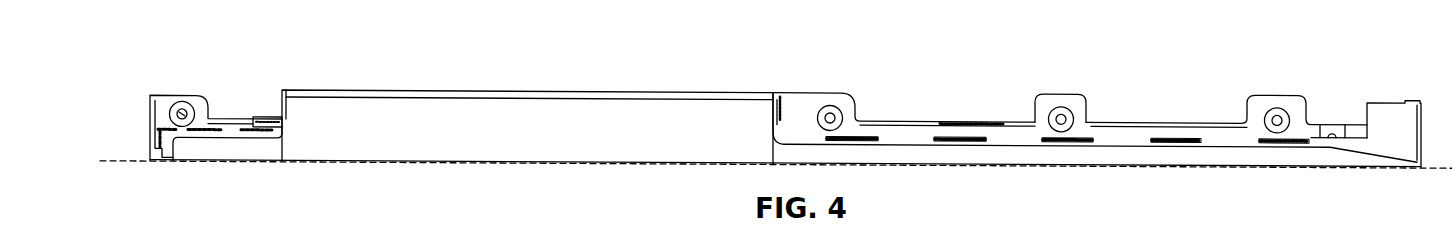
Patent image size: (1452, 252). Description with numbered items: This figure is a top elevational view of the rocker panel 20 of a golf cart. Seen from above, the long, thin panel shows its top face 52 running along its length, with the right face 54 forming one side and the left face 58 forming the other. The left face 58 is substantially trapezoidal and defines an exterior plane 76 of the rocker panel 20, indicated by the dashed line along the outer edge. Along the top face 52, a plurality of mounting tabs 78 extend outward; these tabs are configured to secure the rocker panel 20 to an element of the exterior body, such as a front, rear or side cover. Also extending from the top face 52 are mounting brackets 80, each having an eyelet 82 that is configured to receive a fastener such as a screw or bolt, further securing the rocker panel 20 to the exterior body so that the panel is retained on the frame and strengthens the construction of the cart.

The rocker panel 20 is at (295, 145).
The top face 52 is at (498, 110).
The right face 54 is at (1147, 122).
The left face 58 is at (608, 163).
The exterior plane 76 is at (113, 161).
The mounting tabs 78 is at (258, 132).
The mounting brackets 80 is at (1042, 100).
The eyelets 82 is at (828, 115).